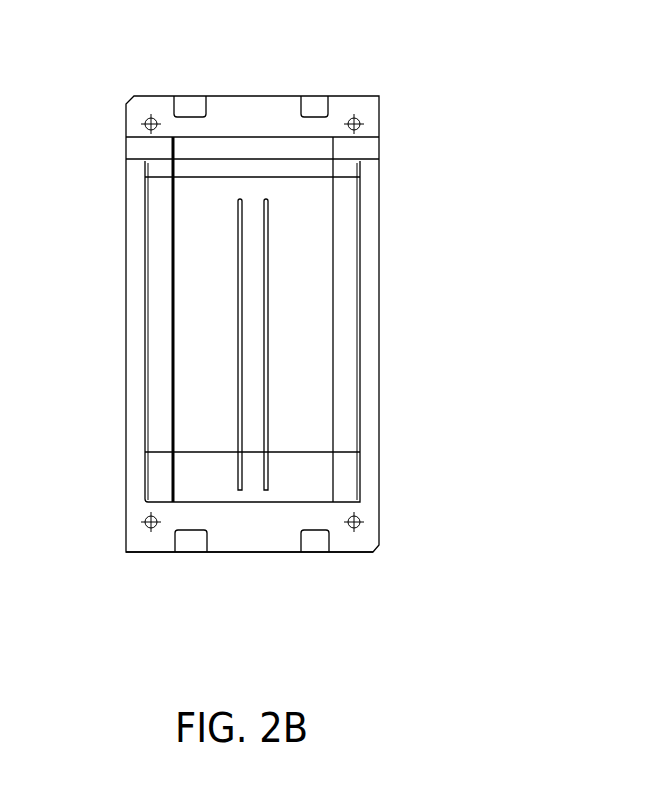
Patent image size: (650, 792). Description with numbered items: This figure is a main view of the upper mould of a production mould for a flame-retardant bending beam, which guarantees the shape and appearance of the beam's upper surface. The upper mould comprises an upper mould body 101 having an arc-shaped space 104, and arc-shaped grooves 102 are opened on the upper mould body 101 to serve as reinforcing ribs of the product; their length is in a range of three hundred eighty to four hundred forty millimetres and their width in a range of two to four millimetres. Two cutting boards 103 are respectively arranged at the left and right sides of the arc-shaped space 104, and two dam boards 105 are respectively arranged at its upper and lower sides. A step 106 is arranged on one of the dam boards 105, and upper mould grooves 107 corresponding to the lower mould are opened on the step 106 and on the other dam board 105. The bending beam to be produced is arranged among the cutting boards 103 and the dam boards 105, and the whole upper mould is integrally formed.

The upper mould body 101 is at (357, 357).
The arc-shaped grooves 102 is at (239, 388).
The cutting boards 103 is at (336, 312).
The arc-shaped space 104 is at (300, 243).
The dam boards 105 is at (233, 547).
The step 106 is at (349, 111).
The upper mould grooves 107 is at (186, 112).